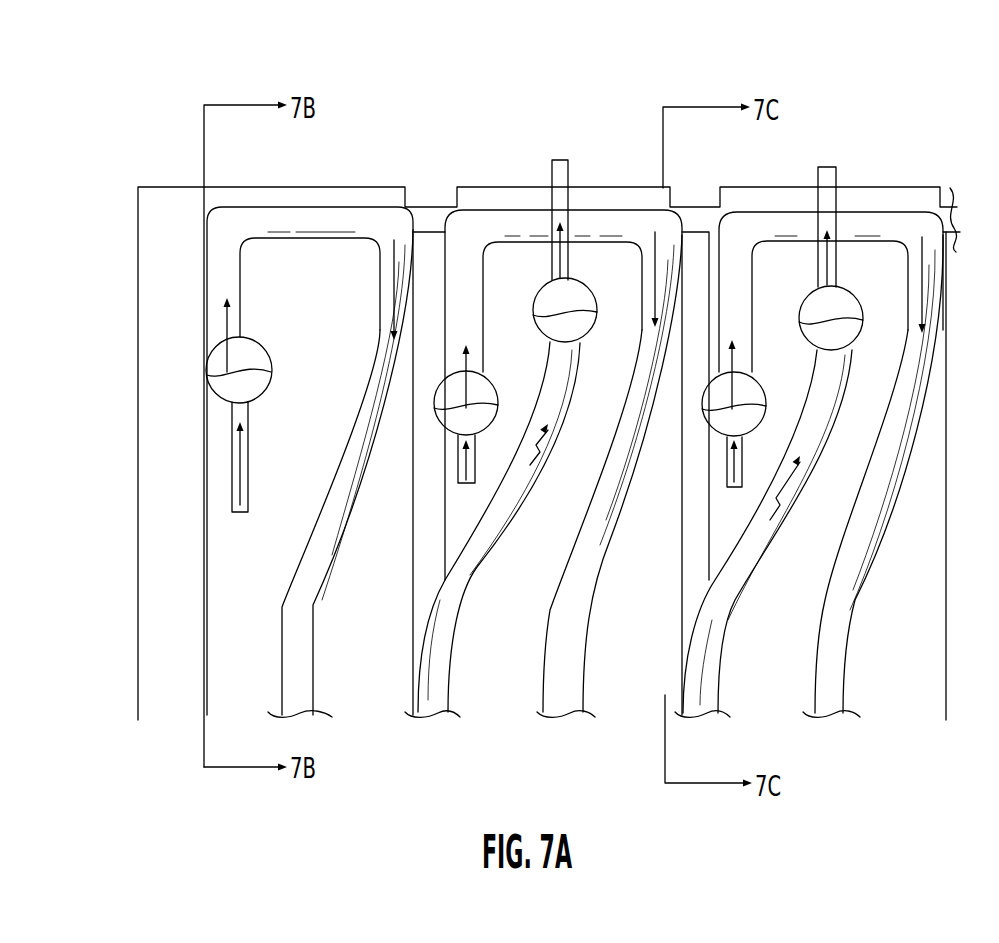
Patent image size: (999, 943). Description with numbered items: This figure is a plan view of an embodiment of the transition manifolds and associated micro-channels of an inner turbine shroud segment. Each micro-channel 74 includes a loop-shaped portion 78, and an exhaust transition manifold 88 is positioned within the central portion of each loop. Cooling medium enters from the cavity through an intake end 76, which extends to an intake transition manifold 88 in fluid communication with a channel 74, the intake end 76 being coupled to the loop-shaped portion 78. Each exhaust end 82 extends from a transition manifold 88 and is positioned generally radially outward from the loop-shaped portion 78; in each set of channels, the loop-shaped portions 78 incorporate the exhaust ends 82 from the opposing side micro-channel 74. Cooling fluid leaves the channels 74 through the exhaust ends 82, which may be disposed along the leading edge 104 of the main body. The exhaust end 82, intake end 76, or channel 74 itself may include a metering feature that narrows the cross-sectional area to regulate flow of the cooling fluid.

The channel 74 is at (303, 606).
The intake end 76 is at (248, 495).
The loop-shaped portion 78 is at (258, 228).
The exhaust end 82 is at (565, 170).
The transition manifold 88 is at (208, 383).
The leading edge 104 is at (398, 186).